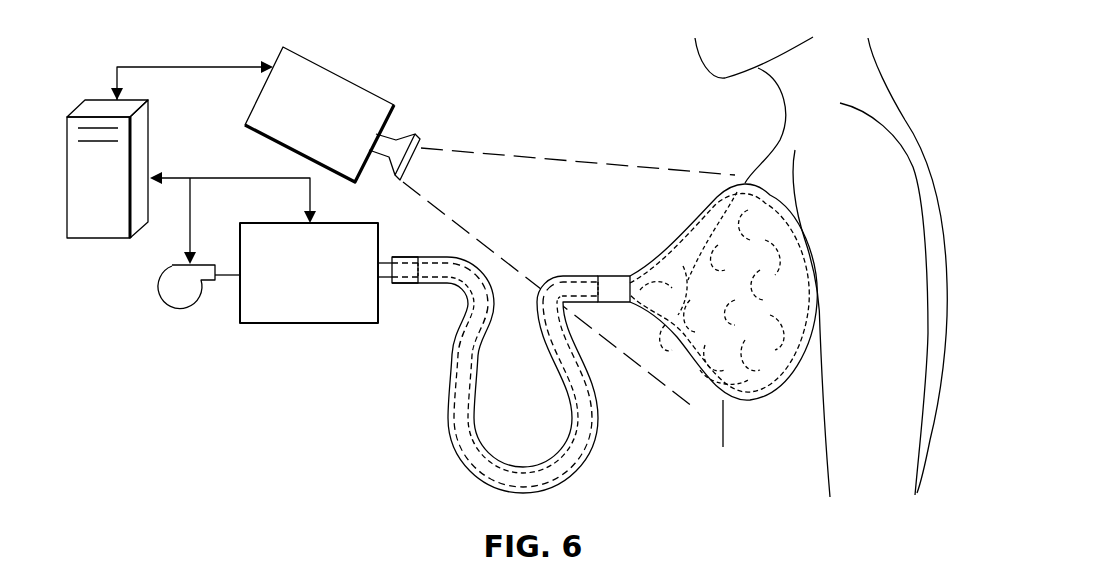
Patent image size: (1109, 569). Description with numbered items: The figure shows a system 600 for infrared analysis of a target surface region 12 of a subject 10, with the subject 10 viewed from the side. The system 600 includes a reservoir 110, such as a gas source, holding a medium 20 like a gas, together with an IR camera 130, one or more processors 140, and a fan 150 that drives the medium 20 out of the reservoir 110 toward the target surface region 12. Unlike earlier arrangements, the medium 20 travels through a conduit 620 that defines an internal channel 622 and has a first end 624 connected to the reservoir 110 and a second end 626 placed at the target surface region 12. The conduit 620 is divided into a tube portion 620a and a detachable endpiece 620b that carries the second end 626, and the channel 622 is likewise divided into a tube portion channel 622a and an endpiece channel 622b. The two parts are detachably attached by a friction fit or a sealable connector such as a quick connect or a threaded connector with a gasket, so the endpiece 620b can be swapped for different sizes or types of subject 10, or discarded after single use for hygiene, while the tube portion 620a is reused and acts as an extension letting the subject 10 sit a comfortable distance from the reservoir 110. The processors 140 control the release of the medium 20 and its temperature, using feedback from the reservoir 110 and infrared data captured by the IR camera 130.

The system for infrared analysis 600 is at (507, 80).
The subject 10 is at (880, 133).
The target surface region 12 is at (773, 303).
The medium 20 is at (682, 265).
The reservoir 110 is at (285, 323).
The IR camera 130 is at (335, 72).
The processor 140 is at (102, 240).
The fan 150 is at (183, 312).
The conduit 620 is at (548, 177).
The tube portion 620a is at (593, 275).
The detachable endpiece 620b is at (697, 222).
The channel 622 is at (663, 443).
The tube portion channel 622a is at (572, 470).
The endpiece channel 622b is at (675, 345).
The first end 624 is at (405, 290).
The second end 626 is at (785, 395).